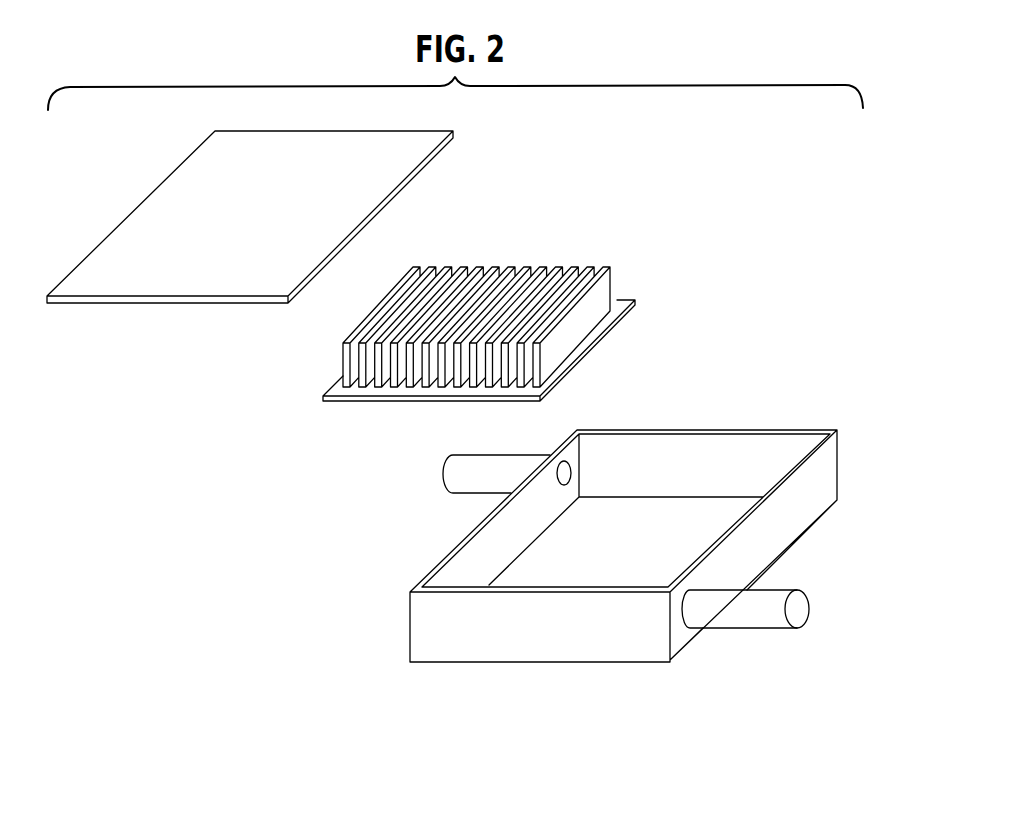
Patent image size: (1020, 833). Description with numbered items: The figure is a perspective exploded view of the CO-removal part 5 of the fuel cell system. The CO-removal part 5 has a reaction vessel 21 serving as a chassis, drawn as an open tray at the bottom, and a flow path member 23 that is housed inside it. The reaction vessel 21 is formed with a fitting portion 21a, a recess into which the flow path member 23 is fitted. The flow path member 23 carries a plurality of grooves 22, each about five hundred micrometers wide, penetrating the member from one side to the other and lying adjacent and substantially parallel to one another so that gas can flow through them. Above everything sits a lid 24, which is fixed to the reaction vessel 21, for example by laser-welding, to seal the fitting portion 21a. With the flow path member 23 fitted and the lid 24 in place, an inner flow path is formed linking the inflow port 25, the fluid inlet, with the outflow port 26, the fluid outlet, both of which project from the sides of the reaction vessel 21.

The CO-removal part 5 is at (598, 231).
The reaction vessel 21 is at (637, 506).
The fitting portion 21a is at (712, 515).
The grooves 22 is at (521, 266).
The flow path member 23 is at (626, 298).
The lid 24 is at (173, 172).
The inflow port 25 is at (447, 479).
The outflow port 26 is at (752, 614).